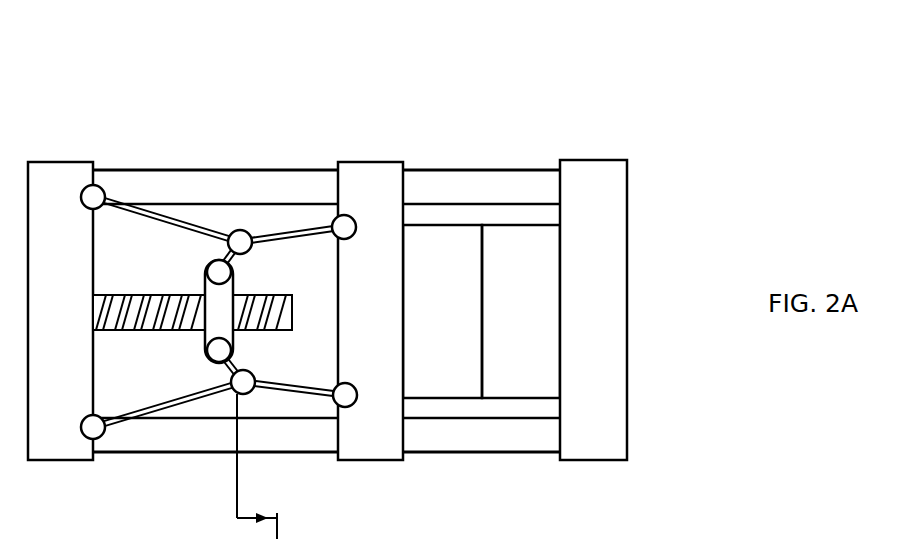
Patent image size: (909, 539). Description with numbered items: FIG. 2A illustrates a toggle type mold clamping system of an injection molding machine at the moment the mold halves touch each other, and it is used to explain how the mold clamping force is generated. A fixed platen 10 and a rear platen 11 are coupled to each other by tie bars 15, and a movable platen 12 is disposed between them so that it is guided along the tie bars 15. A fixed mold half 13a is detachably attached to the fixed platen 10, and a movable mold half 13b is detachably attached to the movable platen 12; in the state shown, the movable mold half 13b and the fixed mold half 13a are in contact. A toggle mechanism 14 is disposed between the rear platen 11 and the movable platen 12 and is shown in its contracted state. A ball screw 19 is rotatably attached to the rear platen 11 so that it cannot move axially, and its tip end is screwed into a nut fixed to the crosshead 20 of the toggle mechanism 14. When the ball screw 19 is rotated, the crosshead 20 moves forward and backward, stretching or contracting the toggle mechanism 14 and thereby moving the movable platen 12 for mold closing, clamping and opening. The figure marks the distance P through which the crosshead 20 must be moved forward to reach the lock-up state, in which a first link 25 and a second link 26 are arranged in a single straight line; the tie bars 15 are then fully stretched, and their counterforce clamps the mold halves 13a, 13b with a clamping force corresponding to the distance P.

The fixed platen 10 is at (598, 160).
The rear platen 11 is at (58, 162).
The movable platen 12 is at (372, 162).
The fixed mold half 13a is at (528, 372).
The movable mold half 13b is at (430, 378).
The toggle mechanism 14 is at (234, 142).
The tie bar 15 is at (472, 166).
The ball screw 19 is at (118, 297).
The crosshead 20 is at (237, 295).
The distance P is at (257, 466).
The first link 25 is at (177, 531).
The second link 26 is at (327, 531).